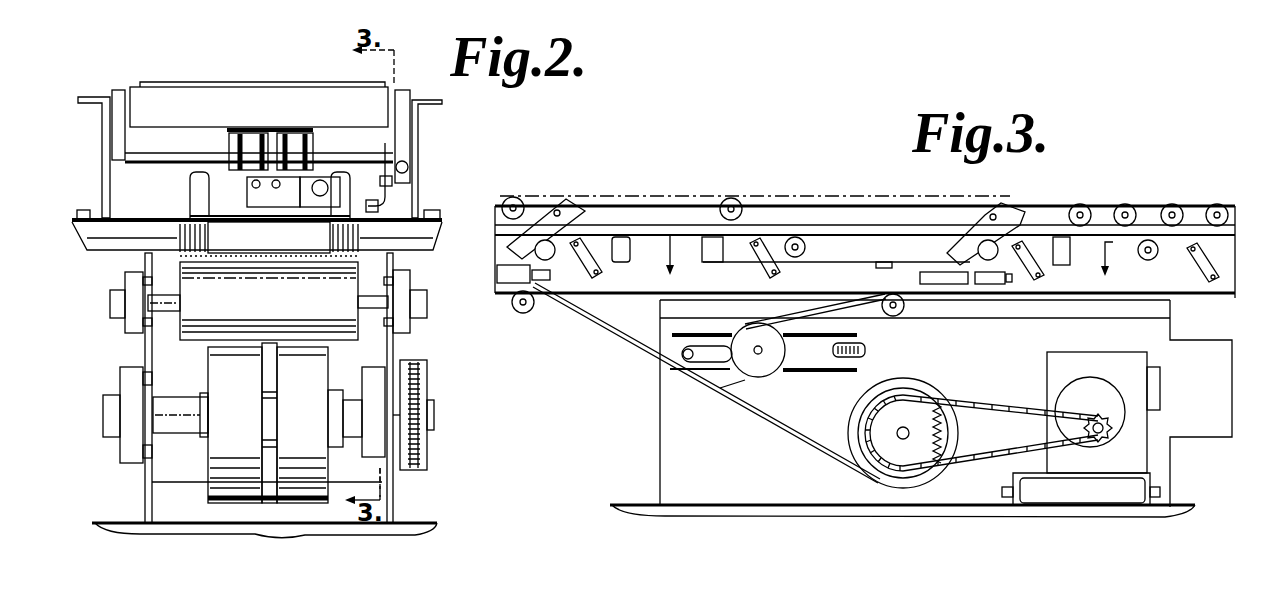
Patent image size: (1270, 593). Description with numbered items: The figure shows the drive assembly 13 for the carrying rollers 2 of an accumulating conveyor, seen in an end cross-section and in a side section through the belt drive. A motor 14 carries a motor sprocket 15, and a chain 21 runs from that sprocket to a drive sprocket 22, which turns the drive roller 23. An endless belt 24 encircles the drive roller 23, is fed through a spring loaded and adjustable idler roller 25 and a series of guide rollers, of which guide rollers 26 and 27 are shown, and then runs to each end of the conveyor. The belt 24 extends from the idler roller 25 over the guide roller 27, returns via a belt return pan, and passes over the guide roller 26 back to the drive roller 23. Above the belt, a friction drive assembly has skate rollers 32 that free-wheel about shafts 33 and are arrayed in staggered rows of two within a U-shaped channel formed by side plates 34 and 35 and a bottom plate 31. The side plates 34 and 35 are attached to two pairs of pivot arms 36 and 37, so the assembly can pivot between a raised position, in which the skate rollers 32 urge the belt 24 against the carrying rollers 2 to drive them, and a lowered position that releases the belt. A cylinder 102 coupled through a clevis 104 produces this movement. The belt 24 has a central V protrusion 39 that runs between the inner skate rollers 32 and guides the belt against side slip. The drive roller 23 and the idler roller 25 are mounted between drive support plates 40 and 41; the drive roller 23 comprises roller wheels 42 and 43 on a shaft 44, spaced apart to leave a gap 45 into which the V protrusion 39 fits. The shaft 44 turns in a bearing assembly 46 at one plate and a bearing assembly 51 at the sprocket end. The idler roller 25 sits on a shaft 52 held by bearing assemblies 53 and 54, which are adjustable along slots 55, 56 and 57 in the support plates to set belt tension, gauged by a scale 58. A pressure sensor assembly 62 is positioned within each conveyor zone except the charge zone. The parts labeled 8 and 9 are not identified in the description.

In FIG. 2, the carrying rollers 2 is at (263, 86).
In FIG. 3, the carrying rollers 2 is at (734, 197).
In FIG. 2, the side rail 8 is at (100, 158).
In FIG. 3, the side rail 8 is at (888, 255).
In FIG. 2, the side rail 9 is at (418, 177).
In FIG. 3, the drive assembly 13 is at (643, 415).
In FIG. 3, the motor 14 is at (1085, 378).
In FIG. 3, the motor sprocket 15 is at (1112, 447).
In FIG. 3, the chain 21 is at (1005, 400).
In FIG. 2, the drive sprocket 22 is at (428, 363).
In FIG. 3, the drive sprocket 22 is at (942, 393).
In FIG. 3, the drive roller 23 is at (850, 407).
In FIG. 3, the endless belt 24 is at (620, 347).
In FIG. 2, the idler roller 25 is at (277, 307).
In FIG. 3, the idler roller 25 is at (765, 378).
In FIG. 3, the guide roller 26 is at (528, 313).
In FIG. 3, the guide roller 27 is at (895, 316).
In FIG. 2, the bottom plate 31 is at (310, 141).
In FIG. 3, the bottom plate 31 is at (830, 268).
In FIG. 2, the skate rollers 32 is at (229, 143).
In FIG. 3, the skate rollers 32 is at (629, 252).
In FIG. 3, the shafts 33 is at (806, 250).
In FIG. 2, the side plate 34 is at (246, 183).
In FIG. 2, the side plate 35 is at (303, 186).
In FIG. 3, the side plate 35 is at (1017, 254).
In FIG. 3, the pivot arms 36 is at (750, 268).
In FIG. 3, the pivot arms 37 is at (1037, 253).
In FIG. 2, the V protrusion 39 is at (270, 222).
In FIG. 2, the drive support plate 40 is at (145, 478).
In FIG. 3, the drive support plate 40 is at (661, 452).
In FIG. 2, the drive support plate 41 is at (393, 490).
In FIG. 2, the roller wheel 42 is at (243, 416).
In FIG. 2, the roller wheel 43 is at (313, 418).
In FIG. 2, the shaft 44 is at (349, 397).
In FIG. 2, the gap 45 is at (260, 380).
In FIG. 2, the bearing assembly 46 is at (100, 388).
In FIG. 2, the bearing assembly 51 is at (377, 371).
In FIG. 2, the shaft 52 is at (166, 315).
In FIG. 2, the bearing assembly 53 is at (105, 311).
In FIG. 2, the bearing assembly 54 is at (433, 280).
In FIG. 3, the slot 55 is at (710, 332).
In FIG. 3, the slot 56 is at (662, 363).
In FIG. 3, the slot 57 is at (720, 391).
In FIG. 3, the scale 58 is at (836, 347).
In FIG. 3, the pressure sensor assembly 62 is at (579, 198).
In FIG. 3, the cylinder 102 is at (965, 288).
In FIG. 3, the clevis 104 is at (992, 287).